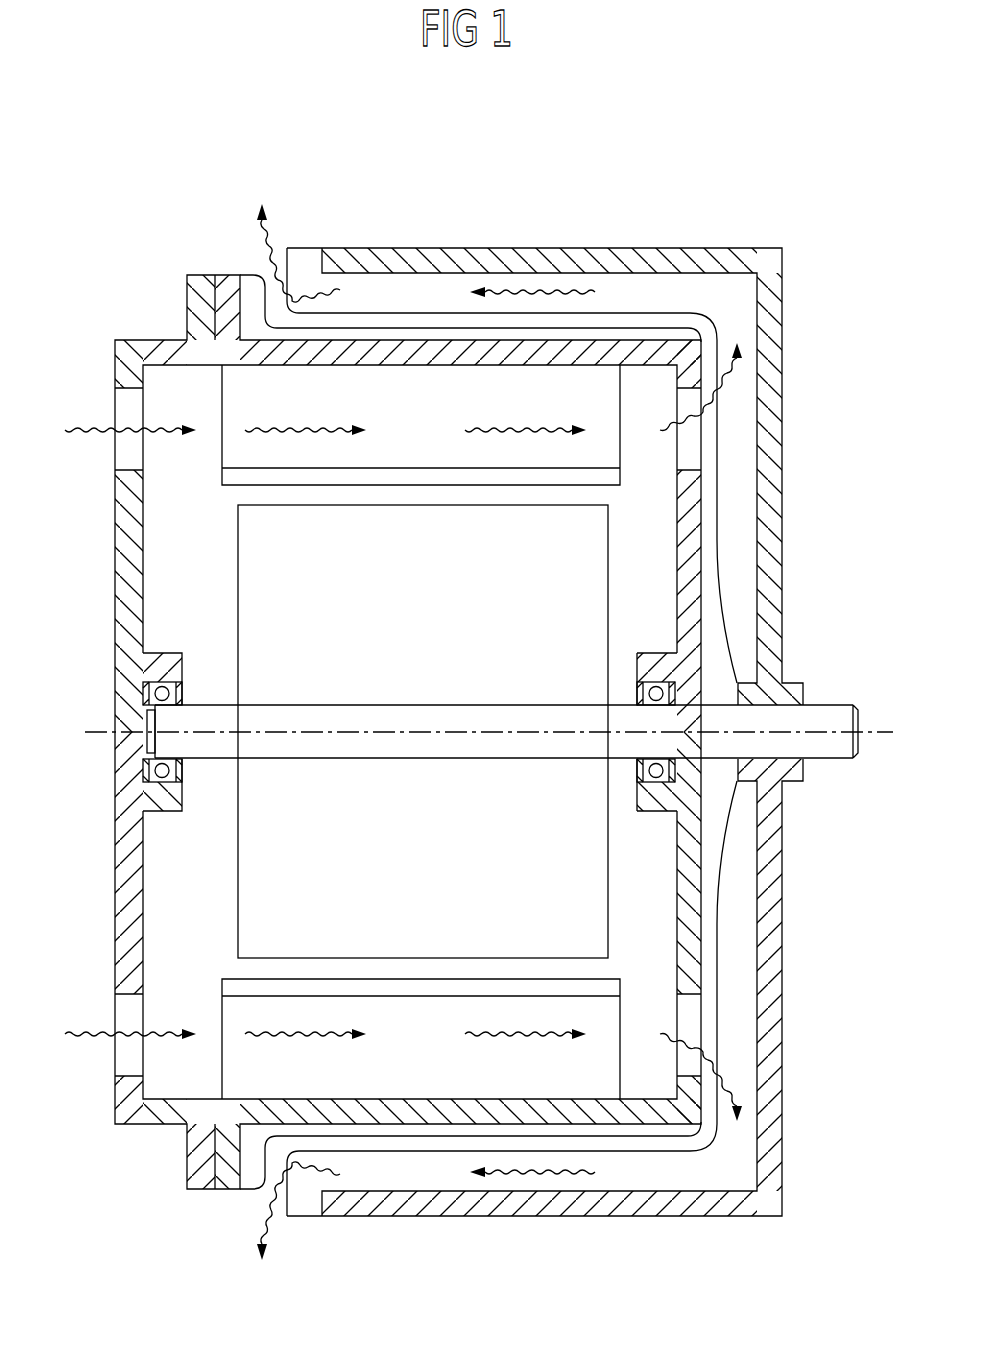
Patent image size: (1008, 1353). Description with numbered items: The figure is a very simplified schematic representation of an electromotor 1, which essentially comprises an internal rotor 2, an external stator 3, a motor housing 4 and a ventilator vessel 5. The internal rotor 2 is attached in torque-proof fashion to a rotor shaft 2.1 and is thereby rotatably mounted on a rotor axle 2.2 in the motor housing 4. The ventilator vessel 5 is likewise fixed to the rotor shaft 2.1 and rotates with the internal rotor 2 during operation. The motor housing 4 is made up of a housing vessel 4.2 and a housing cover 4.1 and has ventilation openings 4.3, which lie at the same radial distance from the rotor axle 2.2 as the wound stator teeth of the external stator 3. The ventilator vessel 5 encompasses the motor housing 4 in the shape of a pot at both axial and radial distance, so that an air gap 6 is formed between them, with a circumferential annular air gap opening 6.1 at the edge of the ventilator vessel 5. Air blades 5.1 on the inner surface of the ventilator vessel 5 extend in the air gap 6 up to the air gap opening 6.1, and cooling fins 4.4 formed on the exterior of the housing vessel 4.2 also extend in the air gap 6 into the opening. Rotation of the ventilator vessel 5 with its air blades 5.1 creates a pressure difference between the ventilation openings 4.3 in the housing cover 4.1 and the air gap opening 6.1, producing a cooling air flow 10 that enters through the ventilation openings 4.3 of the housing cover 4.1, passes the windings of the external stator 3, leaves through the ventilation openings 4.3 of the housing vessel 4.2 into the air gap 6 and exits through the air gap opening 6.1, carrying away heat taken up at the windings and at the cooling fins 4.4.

The electromotor 1 is at (622, 127).
The internal rotor 2 is at (434, 625).
The rotor shaft 2.1 is at (828, 718).
The rotor axle 2.2 is at (878, 742).
The external stator 3 is at (434, 435).
The motor housing 4 is at (204, 249).
The housing cover 4.1 is at (197, 288).
The housing vessel 4.2 is at (226, 288).
The ventilation openings 4.3 is at (125, 400).
The cooling fins 4.4 is at (399, 330).
The ventilator vessel 5 is at (537, 262).
The air blades 5.1 is at (667, 287).
The air gap 6 is at (428, 1147).
The air gap opening 6.1 is at (277, 1183).
The cooling air flow 10 is at (273, 240).